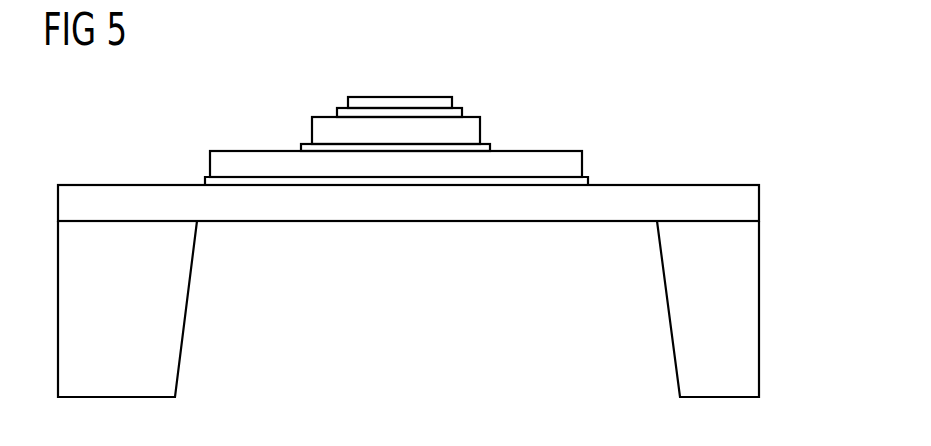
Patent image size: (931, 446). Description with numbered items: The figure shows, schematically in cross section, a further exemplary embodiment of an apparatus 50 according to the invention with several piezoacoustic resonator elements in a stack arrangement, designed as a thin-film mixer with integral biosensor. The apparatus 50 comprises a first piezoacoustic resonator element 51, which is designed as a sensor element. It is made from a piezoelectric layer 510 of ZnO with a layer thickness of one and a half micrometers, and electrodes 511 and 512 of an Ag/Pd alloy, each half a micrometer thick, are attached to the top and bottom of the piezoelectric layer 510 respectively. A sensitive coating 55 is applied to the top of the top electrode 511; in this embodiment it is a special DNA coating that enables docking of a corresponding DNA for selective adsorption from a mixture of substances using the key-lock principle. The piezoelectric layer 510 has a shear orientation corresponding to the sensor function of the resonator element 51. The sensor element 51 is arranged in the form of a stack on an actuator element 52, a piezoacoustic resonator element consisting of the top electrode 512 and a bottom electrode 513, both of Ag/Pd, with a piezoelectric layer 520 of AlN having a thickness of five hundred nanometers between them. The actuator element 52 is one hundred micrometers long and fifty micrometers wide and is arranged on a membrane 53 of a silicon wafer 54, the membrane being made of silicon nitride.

The apparatus 50 is at (720, 78).
The first piezoacoustic resonator element 51 is at (314, 100).
The piezoelectric layer 510 is at (470, 127).
The top electrode 511 is at (432, 112).
The electrode 512 is at (487, 148).
The bottom electrode 513 is at (443, 180).
The actuator element 52 is at (214, 135).
The piezoelectric layer 520 is at (252, 160).
The membrane 53 is at (752, 202).
The silicon wafer 54 is at (752, 305).
The sensitive coating 55 is at (393, 102).